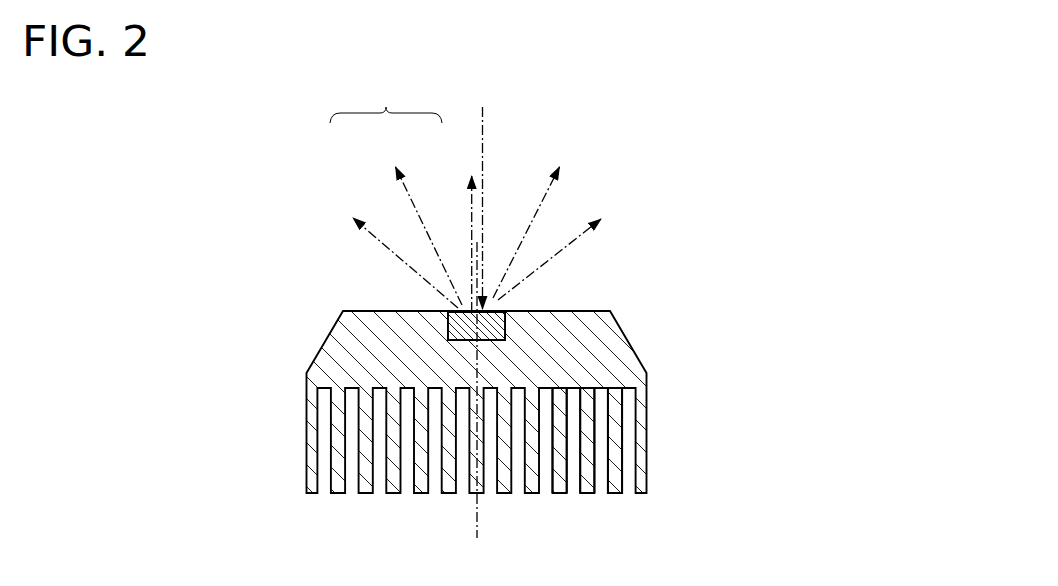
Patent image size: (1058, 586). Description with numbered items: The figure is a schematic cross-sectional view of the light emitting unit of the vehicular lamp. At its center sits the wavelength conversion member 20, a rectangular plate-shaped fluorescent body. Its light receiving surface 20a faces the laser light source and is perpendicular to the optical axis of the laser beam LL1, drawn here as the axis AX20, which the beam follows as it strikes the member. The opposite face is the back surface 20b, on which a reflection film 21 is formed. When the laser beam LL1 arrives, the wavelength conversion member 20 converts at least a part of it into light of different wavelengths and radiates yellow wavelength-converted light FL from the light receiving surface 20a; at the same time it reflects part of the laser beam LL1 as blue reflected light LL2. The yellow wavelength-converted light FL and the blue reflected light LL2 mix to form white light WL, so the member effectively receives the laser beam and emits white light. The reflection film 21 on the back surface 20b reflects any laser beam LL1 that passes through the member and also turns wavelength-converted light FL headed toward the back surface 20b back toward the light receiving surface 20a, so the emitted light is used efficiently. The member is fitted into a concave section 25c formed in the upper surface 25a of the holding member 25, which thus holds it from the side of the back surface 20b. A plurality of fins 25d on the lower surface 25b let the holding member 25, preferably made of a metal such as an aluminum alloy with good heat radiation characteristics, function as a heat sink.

The wavelength conversion member 20 is at (507, 323).
The light receiving surface 20a is at (448, 311).
The back surface 20b is at (456, 341).
The reflection film 21 is at (491, 341).
The holding member 25 is at (650, 369).
The upper surface 25a is at (592, 311).
The lower surface 25b is at (644, 496).
The concave section 25c is at (447, 340).
The fins 25d is at (560, 494).
The optical axis of light emitting element AX20 is at (476, 504).
The laser beam LL1 is at (484, 147).
The reflected light LL2 is at (470, 223).
The wavelength-converted light FL is at (368, 236).
The white light WL is at (386, 98).